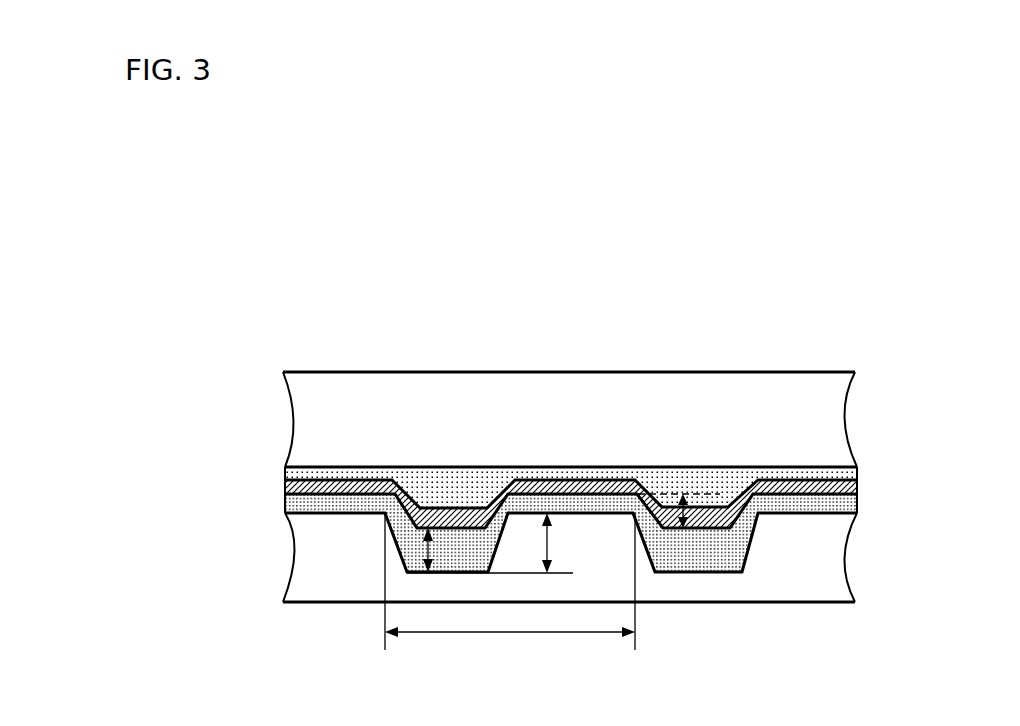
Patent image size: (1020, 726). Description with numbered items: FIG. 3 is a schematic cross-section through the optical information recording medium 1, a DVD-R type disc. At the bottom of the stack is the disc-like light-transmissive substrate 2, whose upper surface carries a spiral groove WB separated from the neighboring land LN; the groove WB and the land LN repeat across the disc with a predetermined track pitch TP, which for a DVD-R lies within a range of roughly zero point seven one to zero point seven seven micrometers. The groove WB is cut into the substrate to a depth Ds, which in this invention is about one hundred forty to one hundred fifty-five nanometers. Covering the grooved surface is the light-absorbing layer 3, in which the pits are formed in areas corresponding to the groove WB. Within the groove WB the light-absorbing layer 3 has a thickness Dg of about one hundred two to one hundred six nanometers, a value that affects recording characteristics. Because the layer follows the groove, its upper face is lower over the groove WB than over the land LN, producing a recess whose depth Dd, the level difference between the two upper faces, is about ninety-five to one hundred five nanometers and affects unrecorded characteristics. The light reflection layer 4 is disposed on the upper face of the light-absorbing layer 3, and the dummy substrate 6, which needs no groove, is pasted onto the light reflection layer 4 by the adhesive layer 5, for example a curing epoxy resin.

The optical information recording medium 1 is at (611, 348).
The light-transmissive substrate 2 is at (837, 540).
The light-absorbing layer 3 is at (857, 500).
The light reflection layer 4 is at (857, 487).
The adhesive layer 5 is at (857, 468).
The dummy substrate 6 is at (827, 415).
The land LN is at (797, 510).
The groove WB is at (703, 575).
The track pitch TP is at (510, 595).
The depth of the groove Ds is at (504, 543).
The thickness of the light-absorbing layer in the groove Dg is at (452, 550).
The depth of the recess Dd is at (692, 508).